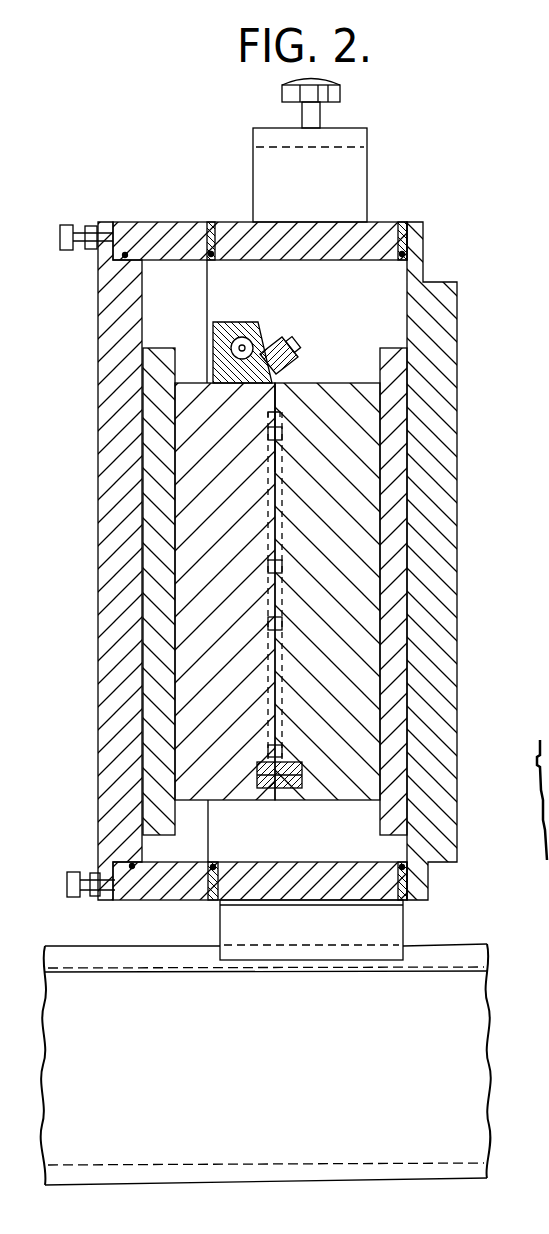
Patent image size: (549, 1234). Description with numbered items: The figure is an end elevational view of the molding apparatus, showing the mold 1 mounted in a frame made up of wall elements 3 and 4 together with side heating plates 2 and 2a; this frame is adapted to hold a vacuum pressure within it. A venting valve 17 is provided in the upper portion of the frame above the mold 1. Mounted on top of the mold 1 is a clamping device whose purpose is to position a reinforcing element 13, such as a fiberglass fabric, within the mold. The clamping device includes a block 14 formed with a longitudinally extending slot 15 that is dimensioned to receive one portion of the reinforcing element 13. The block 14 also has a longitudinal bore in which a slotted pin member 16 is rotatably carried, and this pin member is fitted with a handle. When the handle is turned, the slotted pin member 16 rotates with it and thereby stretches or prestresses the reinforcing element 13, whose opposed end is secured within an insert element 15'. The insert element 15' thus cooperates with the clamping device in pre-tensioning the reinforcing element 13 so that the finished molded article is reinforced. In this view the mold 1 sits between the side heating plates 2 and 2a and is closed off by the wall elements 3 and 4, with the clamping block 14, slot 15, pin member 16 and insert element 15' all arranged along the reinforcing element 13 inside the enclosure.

The mold 1 is at (358, 548).
The side heating plate 2 is at (437, 591).
The side heating plate 2a is at (113, 614).
The wall element 3 is at (386, 882).
The wall element 4 is at (174, 228).
The reinforcing element 13 is at (276, 470).
The block 14 is at (243, 344).
The slot 15 is at (302, 355).
The insert element 15' is at (377, 775).
The slotted pin member 16 is at (233, 345).
The venting valve 17 is at (275, 160).